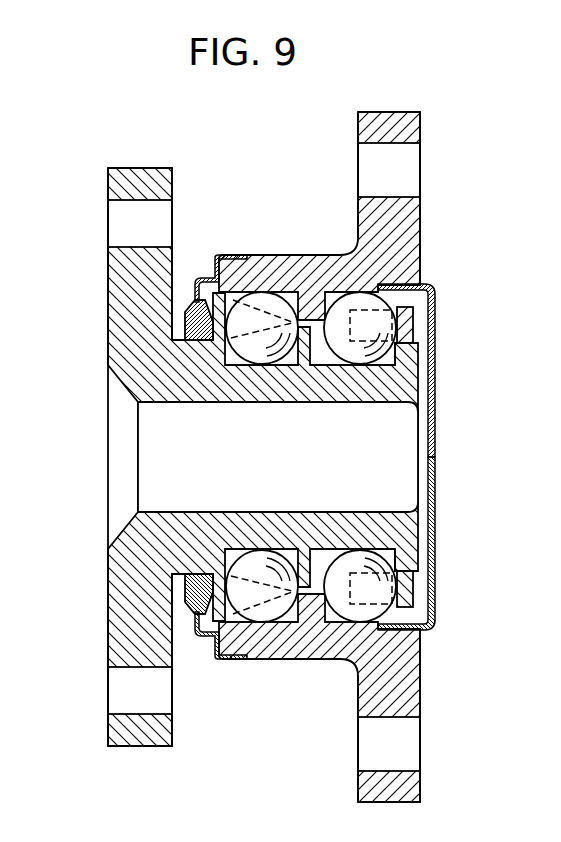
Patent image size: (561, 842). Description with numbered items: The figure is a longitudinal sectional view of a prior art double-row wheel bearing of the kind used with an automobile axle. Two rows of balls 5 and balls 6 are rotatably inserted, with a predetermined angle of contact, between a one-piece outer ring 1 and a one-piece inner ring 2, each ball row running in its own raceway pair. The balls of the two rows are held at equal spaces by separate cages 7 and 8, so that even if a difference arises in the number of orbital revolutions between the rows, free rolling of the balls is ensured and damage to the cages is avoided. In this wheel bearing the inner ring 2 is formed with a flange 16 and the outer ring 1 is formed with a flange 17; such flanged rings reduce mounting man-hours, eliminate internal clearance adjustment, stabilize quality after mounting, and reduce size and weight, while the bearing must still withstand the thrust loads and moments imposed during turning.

The outer ring 1 is at (336, 262).
The inner ring 2 is at (135, 320).
The balls 5 is at (393, 357).
The balls 6 is at (262, 305).
The cage 7 is at (413, 317).
The cage 8 is at (233, 300).
The flange 16 is at (140, 457).
The flange 17 is at (397, 224).